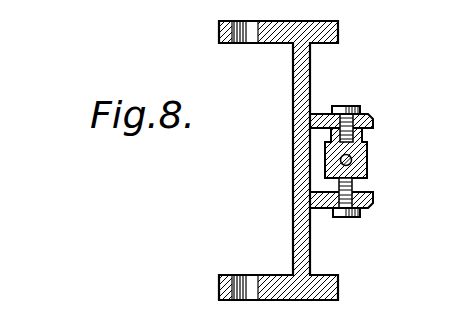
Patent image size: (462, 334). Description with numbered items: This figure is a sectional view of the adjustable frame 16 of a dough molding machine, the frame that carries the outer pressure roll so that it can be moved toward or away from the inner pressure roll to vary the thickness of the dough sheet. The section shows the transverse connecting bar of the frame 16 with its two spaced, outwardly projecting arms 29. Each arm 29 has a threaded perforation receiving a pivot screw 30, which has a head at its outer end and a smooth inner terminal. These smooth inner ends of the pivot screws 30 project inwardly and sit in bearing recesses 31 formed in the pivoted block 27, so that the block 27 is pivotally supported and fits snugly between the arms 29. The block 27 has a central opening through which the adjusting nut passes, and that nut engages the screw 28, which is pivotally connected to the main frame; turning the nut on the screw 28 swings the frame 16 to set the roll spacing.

The adjustable frame 16 is at (292, 99).
The pivoted block 27 is at (366, 150).
The screw 28 is at (352, 160).
The arms 29 is at (372, 118).
The pivot screws 30 is at (341, 105).
The bearing recesses 31 is at (357, 132).